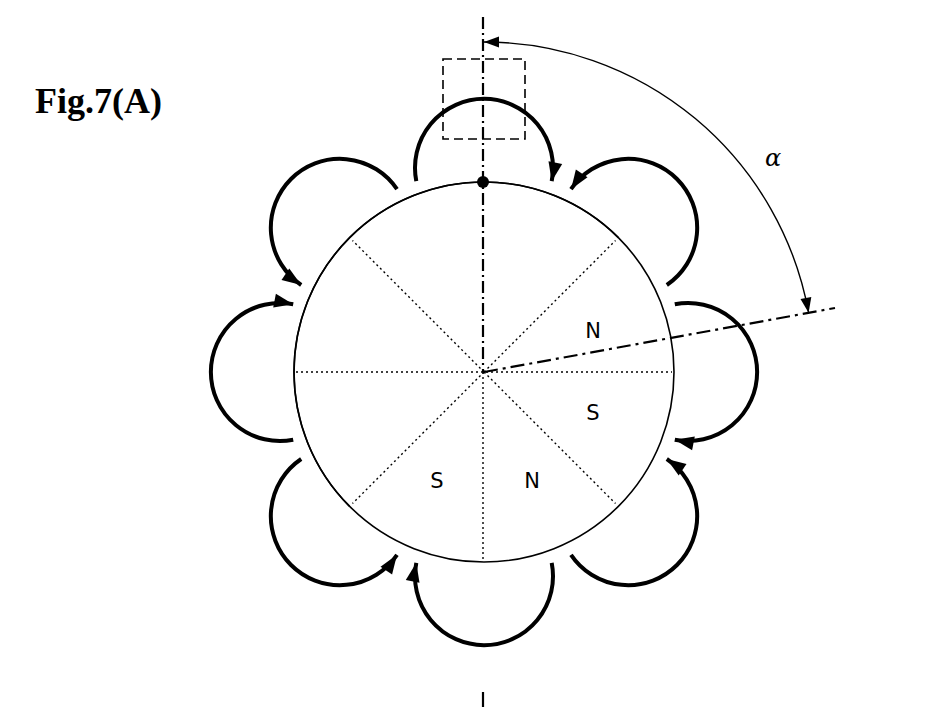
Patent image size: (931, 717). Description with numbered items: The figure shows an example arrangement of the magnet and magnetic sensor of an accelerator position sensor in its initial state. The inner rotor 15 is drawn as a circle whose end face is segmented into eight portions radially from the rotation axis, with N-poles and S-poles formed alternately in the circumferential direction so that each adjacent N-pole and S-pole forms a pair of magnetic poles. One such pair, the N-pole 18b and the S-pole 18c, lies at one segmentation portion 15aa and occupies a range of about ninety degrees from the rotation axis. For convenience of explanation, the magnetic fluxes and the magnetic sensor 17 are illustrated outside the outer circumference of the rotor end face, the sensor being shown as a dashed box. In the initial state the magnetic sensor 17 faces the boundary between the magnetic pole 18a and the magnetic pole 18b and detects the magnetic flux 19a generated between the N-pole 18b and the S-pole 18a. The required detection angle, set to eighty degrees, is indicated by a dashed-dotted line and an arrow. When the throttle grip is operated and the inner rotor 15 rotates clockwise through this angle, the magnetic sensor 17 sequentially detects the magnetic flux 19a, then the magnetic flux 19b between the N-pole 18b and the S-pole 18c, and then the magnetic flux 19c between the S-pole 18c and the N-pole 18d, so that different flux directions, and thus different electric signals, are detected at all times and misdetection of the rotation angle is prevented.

The inner rotor 15 is at (640, 483).
The segmentation portion 15aa is at (387, 277).
The magnetic sensor 17 is at (443, 72).
The magnetic pole 18a is at (550, 207).
The magnetic pole 18b is at (412, 205).
The magnetic pole 18c is at (313, 308).
The magnetic pole 18d is at (312, 442).
The magnetic flux 19a is at (537, 120).
The magnetic flux 19b is at (315, 160).
The magnetic flux 19c is at (218, 338).